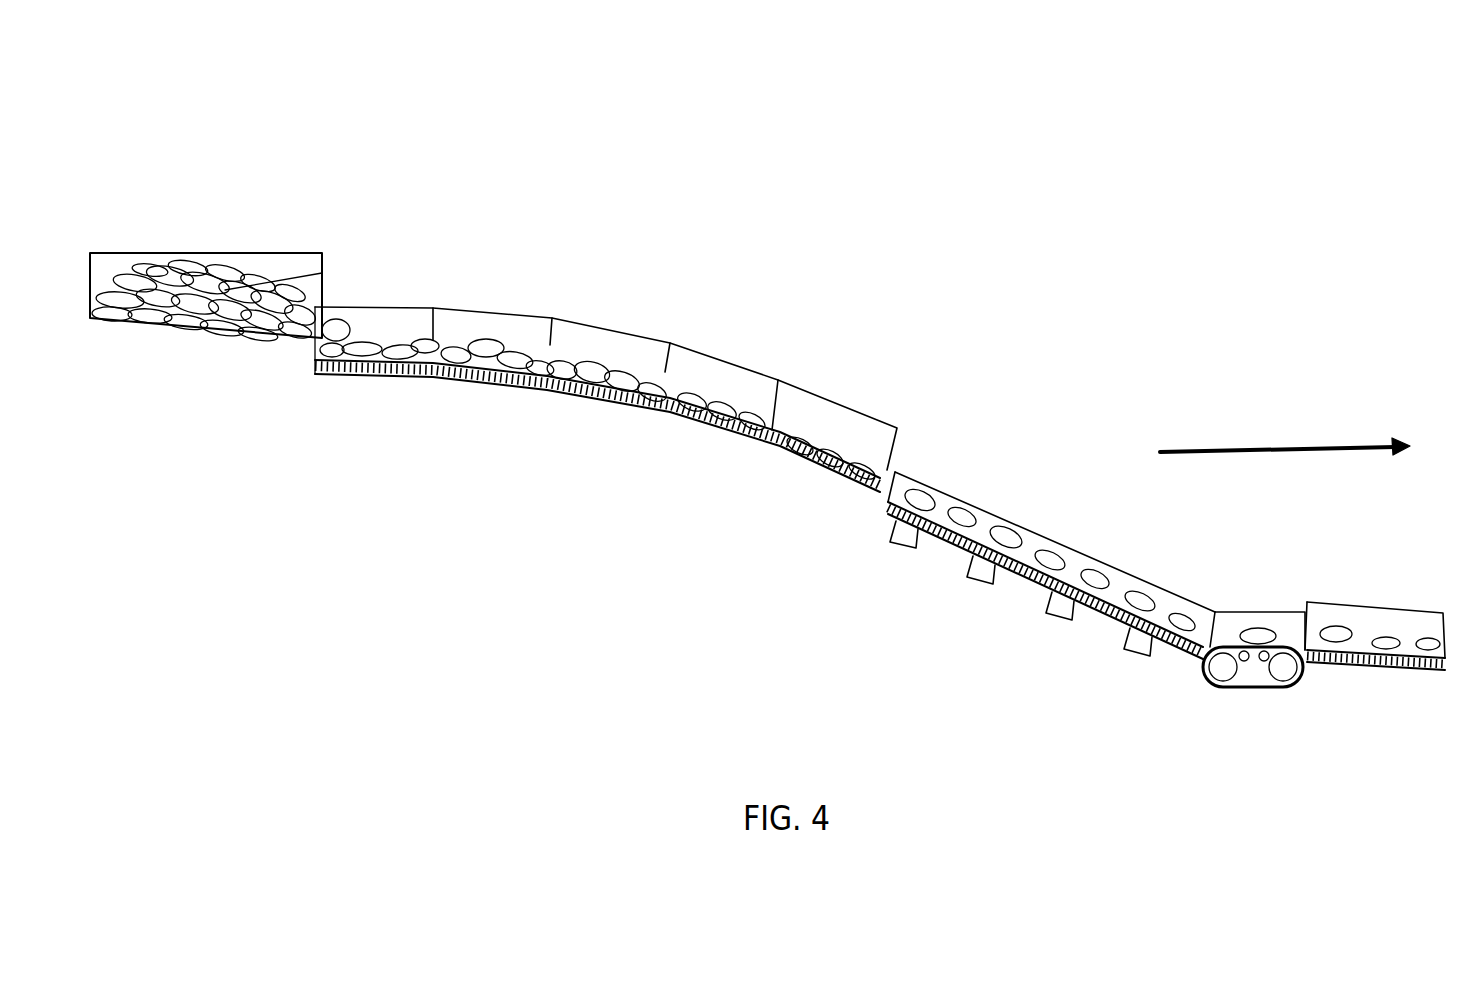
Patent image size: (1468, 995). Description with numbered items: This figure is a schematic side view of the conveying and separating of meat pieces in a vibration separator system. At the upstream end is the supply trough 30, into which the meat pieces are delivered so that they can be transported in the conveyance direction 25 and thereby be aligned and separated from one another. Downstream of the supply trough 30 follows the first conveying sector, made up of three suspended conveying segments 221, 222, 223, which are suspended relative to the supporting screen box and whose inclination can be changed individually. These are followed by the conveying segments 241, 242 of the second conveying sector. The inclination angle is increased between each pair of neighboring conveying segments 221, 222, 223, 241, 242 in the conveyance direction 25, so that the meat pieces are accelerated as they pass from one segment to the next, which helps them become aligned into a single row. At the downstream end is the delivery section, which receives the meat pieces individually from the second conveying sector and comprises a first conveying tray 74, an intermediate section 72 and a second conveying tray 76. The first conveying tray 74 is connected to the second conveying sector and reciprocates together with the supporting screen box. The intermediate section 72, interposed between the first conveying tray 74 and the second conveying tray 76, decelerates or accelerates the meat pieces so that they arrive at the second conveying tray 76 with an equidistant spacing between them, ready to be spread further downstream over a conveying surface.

The supply trough 30 is at (207, 357).
The first conveying segment 221 is at (414, 298).
The second conveying segment 222 is at (520, 298).
The third conveying segment 223 is at (617, 305).
The conveying segment of the second conveying sector 241 is at (738, 345).
The conveying segment of the second conveying sector 242 is at (845, 387).
The conveyance direction 25 is at (1256, 455).
The first conveying tray 74 is at (1023, 624).
The intermediate section 72 is at (1262, 707).
The second conveying tray 76 is at (1398, 697).